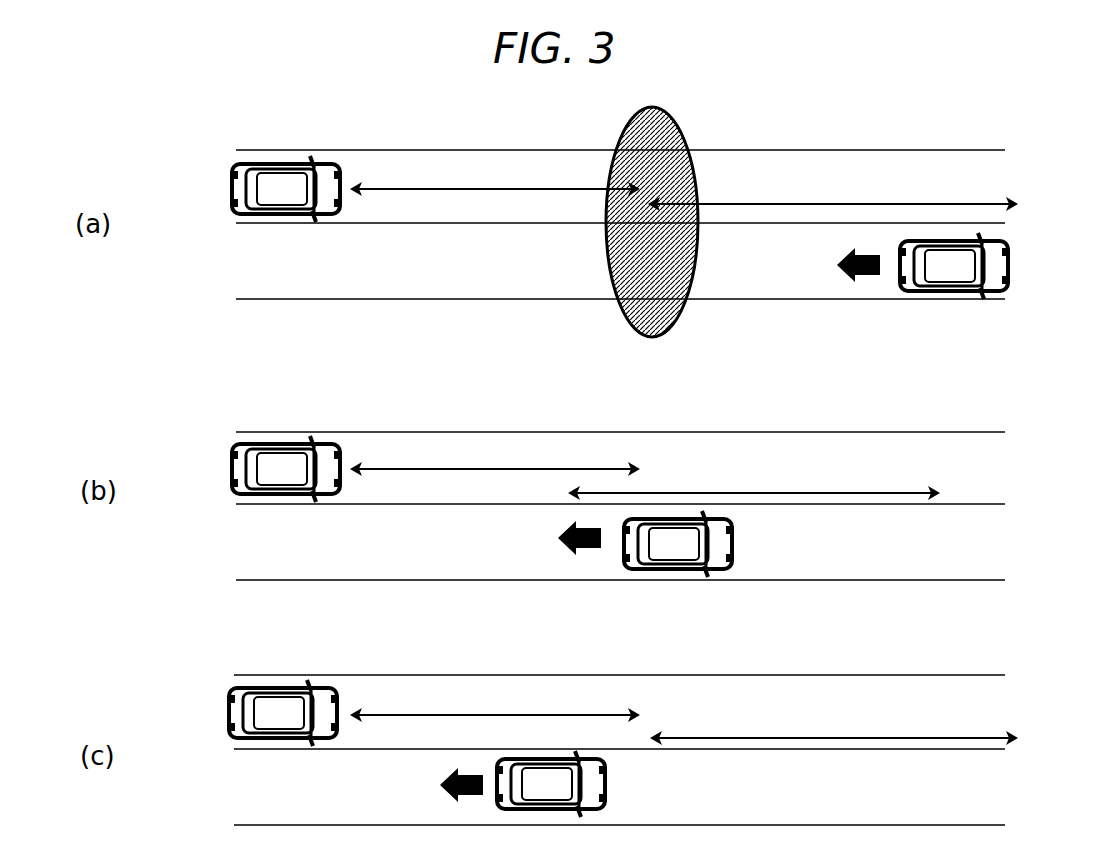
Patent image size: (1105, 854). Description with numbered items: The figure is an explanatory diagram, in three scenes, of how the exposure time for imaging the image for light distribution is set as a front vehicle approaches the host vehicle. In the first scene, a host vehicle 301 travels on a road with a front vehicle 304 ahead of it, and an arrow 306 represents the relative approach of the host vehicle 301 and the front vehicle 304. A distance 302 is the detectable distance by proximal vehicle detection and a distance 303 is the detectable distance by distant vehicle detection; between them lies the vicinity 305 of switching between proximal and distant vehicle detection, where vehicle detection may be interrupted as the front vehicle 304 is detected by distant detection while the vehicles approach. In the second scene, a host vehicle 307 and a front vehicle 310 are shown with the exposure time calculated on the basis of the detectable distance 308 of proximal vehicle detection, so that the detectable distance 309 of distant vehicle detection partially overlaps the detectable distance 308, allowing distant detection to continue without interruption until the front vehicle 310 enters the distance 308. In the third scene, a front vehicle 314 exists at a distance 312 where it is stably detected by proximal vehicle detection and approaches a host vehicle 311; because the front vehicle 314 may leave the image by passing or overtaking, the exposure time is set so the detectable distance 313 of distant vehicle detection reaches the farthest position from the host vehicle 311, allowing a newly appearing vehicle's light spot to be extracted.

The host vehicle 301 is at (226, 167).
The detectable distance of proximal vehicle detection 302 is at (552, 188).
The detectable distance of distant vehicle detection 303 is at (805, 203).
The front vehicle 304 is at (1012, 266).
The switching range of proximal vehicle detection and distant vehicle detection 305 is at (618, 140).
The relative movement of host vehicle and front vehicle 306 is at (835, 275).
The host vehicle 307 is at (228, 468).
The detectable distance of proximal vehicle detection 308 is at (474, 468).
The detectable distance of distant vehicle detection 309 is at (775, 492).
The front vehicle 310 is at (734, 555).
The host vehicle 311 is at (225, 704).
The detectable distance of proximal vehicle detection 312 is at (480, 714).
The detectable distance of distant vehicle detection 313 is at (790, 737).
The front vehicle 314 is at (607, 795).